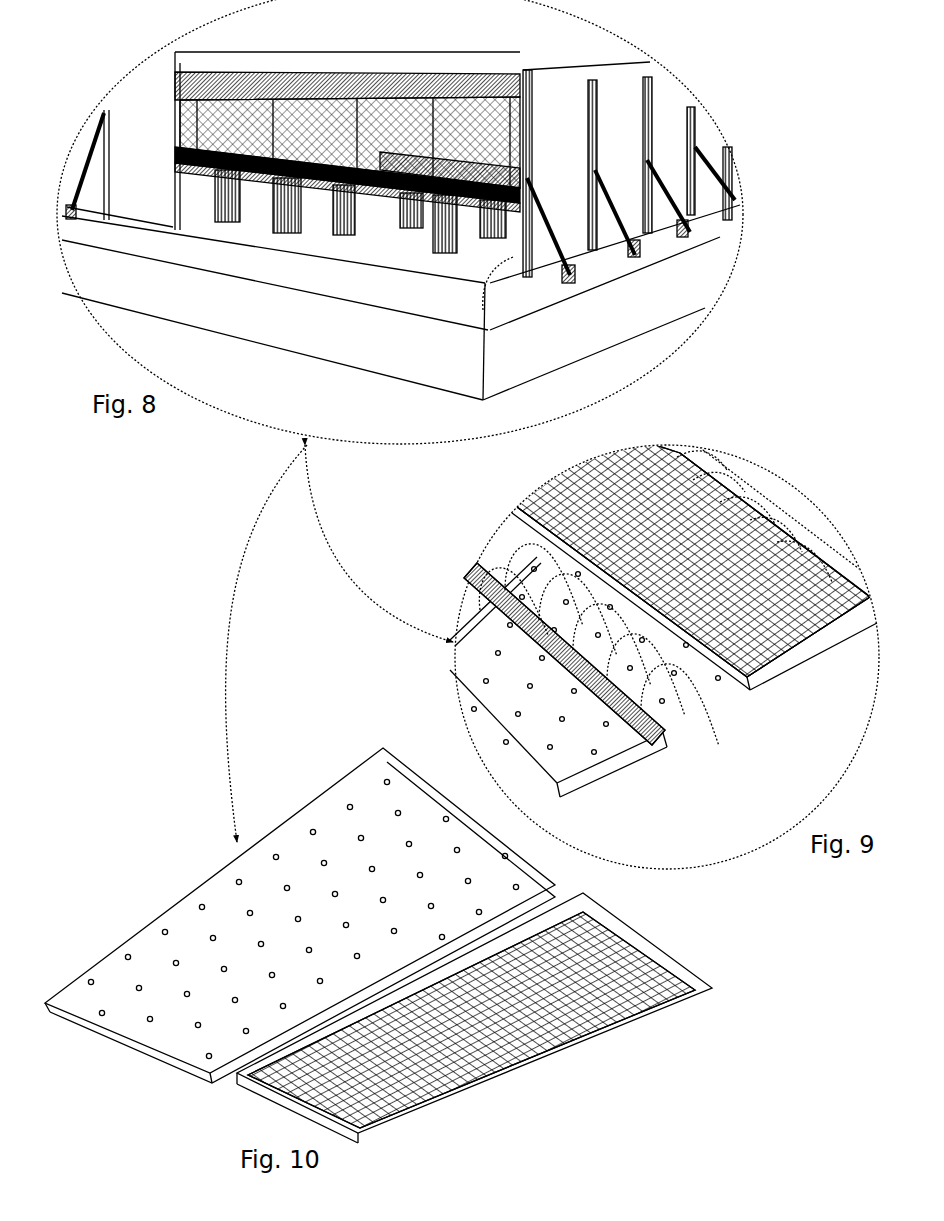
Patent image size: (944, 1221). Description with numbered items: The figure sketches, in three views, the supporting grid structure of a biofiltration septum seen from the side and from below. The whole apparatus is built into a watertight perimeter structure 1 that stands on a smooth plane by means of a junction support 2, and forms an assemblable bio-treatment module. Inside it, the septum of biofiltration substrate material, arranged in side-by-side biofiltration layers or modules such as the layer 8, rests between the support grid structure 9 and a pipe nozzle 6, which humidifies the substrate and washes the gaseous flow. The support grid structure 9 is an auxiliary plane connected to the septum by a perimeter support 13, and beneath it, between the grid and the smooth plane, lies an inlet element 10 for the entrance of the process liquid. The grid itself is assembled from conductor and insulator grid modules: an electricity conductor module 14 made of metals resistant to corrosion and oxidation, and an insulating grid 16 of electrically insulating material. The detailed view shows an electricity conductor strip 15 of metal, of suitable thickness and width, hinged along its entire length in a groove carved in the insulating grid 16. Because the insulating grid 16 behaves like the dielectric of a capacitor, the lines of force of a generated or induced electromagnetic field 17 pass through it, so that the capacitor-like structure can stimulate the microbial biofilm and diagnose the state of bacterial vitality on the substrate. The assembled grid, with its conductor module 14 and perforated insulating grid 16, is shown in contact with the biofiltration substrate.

In FIG. 8, the watertight perimeter structure 1 is at (552, 183).
In FIG. 8, the junction support 2 is at (600, 152).
In FIG. 8, the pipe nozzle 6 is at (470, 95).
In FIG. 8, the biofiltration layer/module 8 is at (302, 108).
In FIG. 8, the support grid structure 9 is at (340, 230).
In FIG. 8, the inlet element 10 is at (247, 222).
In FIG. 8, the perimeter support 13 is at (513, 257).
In FIG. 9, the electricity conductor module 14 is at (800, 670).
In FIG. 10, the electricity conductor module 14 is at (693, 963).
In FIG. 9, the electricity conductor strip 15 is at (663, 738).
In FIG. 9, the insulating grid 16 is at (563, 760).
In FIG. 10, the insulating grid 16 is at (143, 1030).
In FIG. 9, the electromagnetic field 17 is at (680, 668).